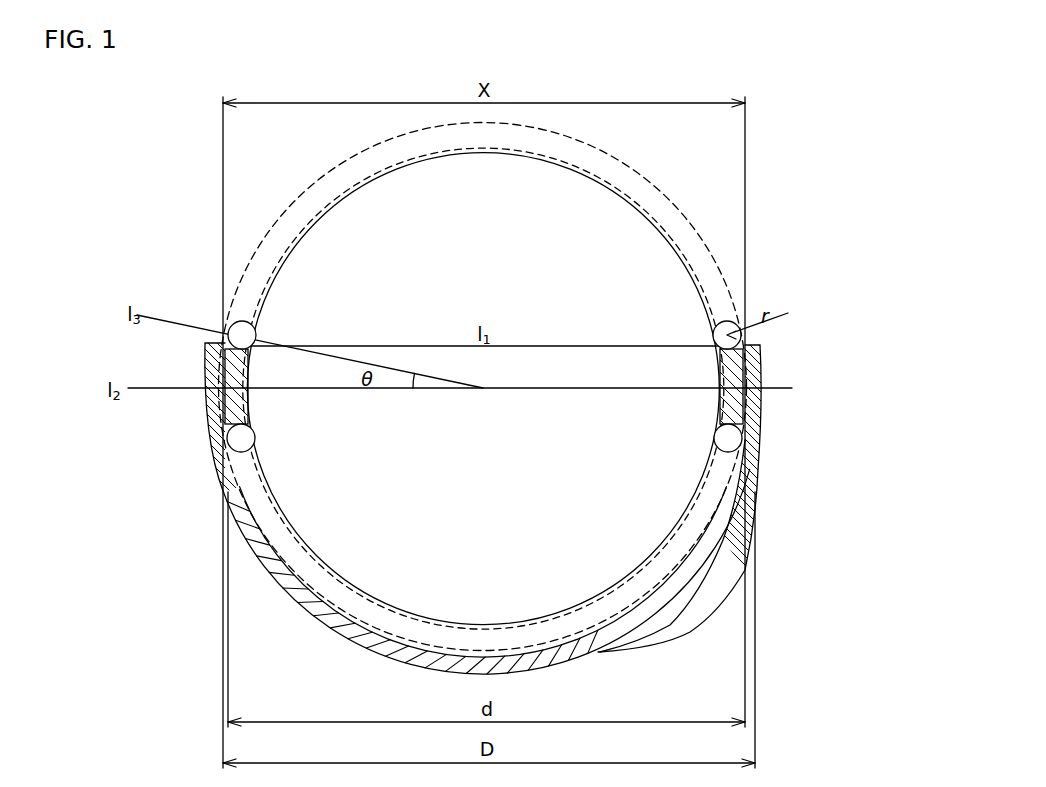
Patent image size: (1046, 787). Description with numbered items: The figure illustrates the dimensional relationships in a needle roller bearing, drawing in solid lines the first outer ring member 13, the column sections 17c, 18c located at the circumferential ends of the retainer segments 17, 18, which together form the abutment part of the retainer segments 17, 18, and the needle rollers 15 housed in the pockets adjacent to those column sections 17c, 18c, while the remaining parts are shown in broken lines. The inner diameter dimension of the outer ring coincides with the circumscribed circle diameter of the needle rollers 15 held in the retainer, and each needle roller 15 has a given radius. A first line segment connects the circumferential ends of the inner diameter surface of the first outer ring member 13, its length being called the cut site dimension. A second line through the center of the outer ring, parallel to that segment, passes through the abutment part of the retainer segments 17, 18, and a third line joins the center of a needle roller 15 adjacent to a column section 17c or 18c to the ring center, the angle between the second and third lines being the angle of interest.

The first outer ring member 13 is at (343, 624).
The needle roller 15 is at (243, 333).
The retainer segment 17 is at (610, 170).
The column section 17c is at (232, 374).
The retainer segment 18 is at (622, 603).
The column section 18c is at (232, 403).